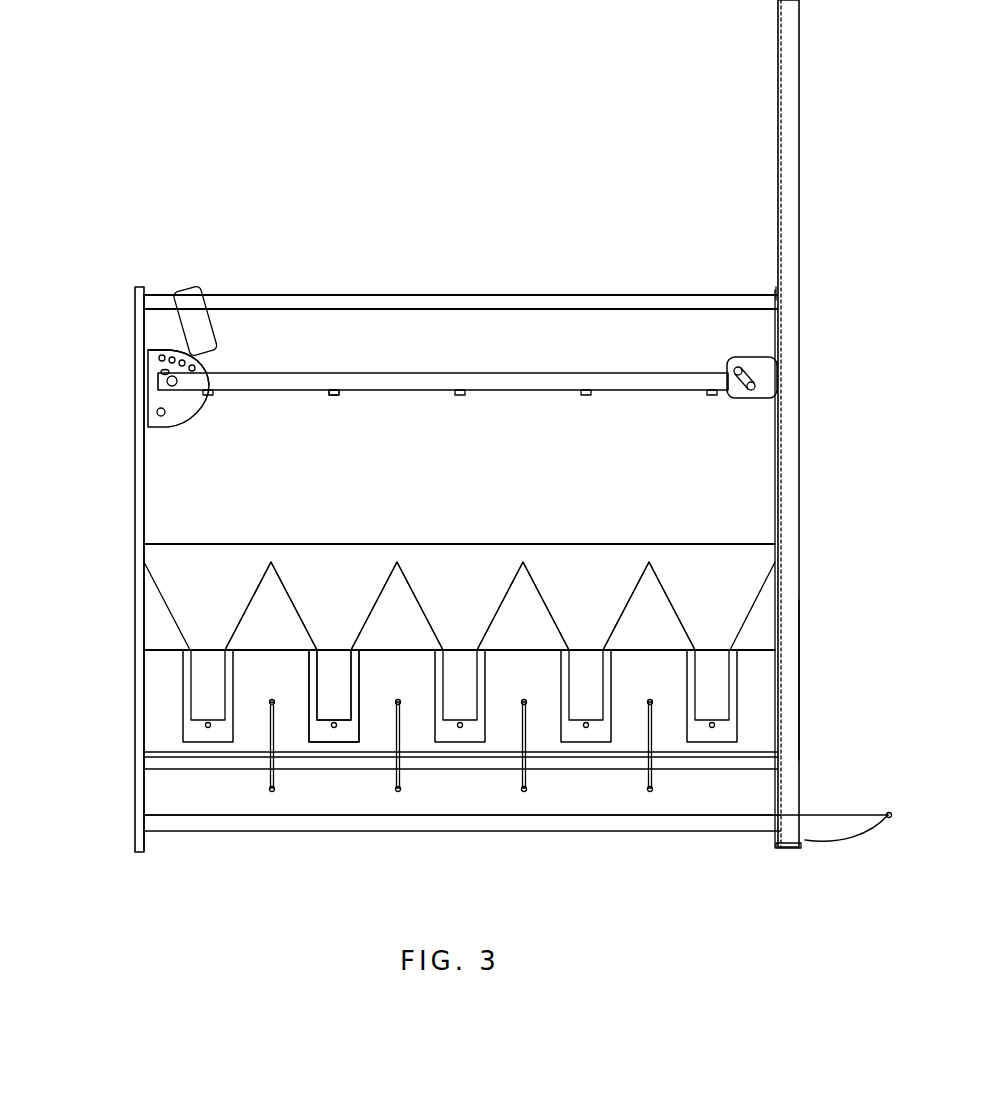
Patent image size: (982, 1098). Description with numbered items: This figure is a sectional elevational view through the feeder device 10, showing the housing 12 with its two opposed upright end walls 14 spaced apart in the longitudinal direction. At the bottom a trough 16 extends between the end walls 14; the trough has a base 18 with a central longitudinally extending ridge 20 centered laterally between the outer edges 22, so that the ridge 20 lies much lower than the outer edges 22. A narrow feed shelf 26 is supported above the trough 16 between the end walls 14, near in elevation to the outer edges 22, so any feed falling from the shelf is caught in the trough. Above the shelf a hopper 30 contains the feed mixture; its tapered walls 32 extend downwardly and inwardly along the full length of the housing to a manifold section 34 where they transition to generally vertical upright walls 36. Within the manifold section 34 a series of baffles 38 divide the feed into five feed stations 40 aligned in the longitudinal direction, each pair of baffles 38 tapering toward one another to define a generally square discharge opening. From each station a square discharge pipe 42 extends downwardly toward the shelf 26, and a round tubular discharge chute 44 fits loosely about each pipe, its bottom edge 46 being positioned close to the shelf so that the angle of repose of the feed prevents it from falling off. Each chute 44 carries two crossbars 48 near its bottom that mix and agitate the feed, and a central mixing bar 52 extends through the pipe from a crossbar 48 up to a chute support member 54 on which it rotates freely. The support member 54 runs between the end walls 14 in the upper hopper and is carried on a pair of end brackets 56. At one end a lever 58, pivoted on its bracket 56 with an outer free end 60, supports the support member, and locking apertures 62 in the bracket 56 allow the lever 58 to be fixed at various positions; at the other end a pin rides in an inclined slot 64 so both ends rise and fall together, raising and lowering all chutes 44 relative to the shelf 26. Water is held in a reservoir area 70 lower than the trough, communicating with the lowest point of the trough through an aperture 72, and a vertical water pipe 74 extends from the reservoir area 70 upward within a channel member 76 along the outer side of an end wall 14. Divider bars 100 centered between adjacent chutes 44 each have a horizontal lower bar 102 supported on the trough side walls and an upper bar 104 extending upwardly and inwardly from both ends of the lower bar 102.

The device 10 is at (405, 62).
The housing 12 is at (128, 469).
The end walls 14 is at (146, 495).
The trough 16 is at (291, 850).
The base 18 is at (585, 834).
The central ridge 20 is at (698, 818).
The outer edges 22 is at (160, 770).
The feed shelf 26 is at (150, 757).
The hopper 30 is at (652, 352).
The tapered walls 32 is at (757, 520).
The manifold section 34 is at (714, 608).
The upright walls 36 is at (740, 594).
The baffles 38 is at (284, 582).
The feed stations 40 is at (210, 508).
The discharge pipe 42 is at (343, 692).
The discharge chute 44 is at (362, 696).
The bottom edge 46 is at (351, 744).
The crossbars 48 is at (337, 730).
The central mixing bar 52 is at (334, 398).
The chute support member 54 is at (531, 385).
The end brackets 56 is at (150, 362).
The lever 58 is at (183, 333).
The outer free end 60 is at (207, 287).
The locking apertures 62 is at (162, 352).
The slot 64 is at (760, 376).
The reservoir area 70 is at (845, 785).
The aperture 72 is at (805, 840).
The water pipe 74 is at (800, 193).
The channel member 76 is at (800, 681).
The divider bars 100 is at (267, 803).
The lower bar 102 is at (277, 792).
The upper bar 104 is at (266, 716).